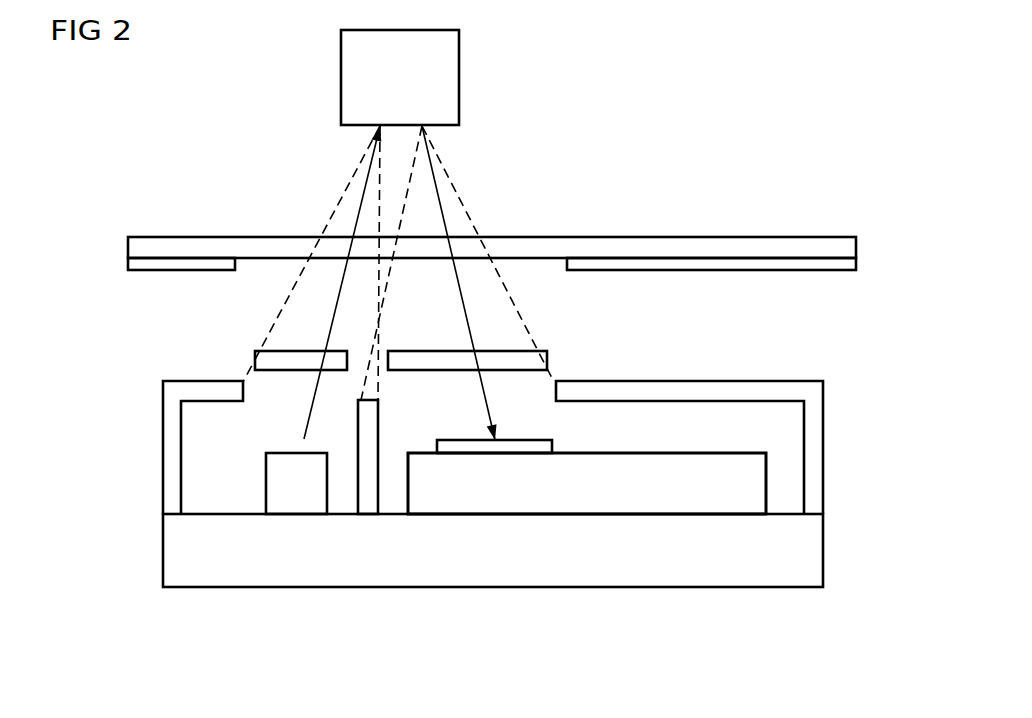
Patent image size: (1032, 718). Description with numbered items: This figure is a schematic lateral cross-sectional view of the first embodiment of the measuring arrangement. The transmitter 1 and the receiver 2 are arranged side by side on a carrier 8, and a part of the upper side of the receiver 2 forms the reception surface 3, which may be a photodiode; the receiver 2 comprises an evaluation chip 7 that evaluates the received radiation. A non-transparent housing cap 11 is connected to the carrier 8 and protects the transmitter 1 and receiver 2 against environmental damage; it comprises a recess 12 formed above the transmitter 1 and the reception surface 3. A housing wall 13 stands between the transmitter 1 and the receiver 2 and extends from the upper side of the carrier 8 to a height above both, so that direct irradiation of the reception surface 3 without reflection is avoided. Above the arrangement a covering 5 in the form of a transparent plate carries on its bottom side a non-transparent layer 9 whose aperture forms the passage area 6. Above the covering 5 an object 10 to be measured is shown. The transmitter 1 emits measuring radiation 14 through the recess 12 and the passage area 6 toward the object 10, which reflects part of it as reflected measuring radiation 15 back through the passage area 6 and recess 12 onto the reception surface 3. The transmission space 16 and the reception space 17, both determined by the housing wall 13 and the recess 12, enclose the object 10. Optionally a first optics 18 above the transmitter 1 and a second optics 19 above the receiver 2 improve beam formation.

The transmitter 1 is at (297, 500).
The receiver 2 is at (731, 503).
The reception surface 3 is at (496, 447).
The covering 5 is at (838, 243).
The passage area 6 is at (260, 268).
The evaluation chip 7 is at (587, 483).
The carrier 8 is at (815, 550).
The non-transparent layer 9 is at (848, 264).
The object 10 is at (451, 78).
The housing cap 11 is at (170, 448).
The recess 12 is at (553, 380).
The housing wall 13 is at (369, 500).
The measuring radiation 14 is at (368, 165).
The reflected measuring radiation 15 is at (433, 172).
The transmission space 16 is at (341, 208).
The reception space 17 is at (459, 215).
The first optics 18 is at (300, 360).
The second optics 19 is at (412, 360).